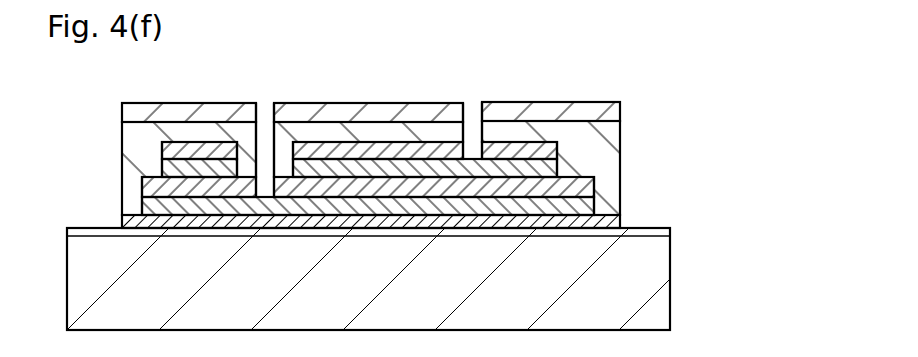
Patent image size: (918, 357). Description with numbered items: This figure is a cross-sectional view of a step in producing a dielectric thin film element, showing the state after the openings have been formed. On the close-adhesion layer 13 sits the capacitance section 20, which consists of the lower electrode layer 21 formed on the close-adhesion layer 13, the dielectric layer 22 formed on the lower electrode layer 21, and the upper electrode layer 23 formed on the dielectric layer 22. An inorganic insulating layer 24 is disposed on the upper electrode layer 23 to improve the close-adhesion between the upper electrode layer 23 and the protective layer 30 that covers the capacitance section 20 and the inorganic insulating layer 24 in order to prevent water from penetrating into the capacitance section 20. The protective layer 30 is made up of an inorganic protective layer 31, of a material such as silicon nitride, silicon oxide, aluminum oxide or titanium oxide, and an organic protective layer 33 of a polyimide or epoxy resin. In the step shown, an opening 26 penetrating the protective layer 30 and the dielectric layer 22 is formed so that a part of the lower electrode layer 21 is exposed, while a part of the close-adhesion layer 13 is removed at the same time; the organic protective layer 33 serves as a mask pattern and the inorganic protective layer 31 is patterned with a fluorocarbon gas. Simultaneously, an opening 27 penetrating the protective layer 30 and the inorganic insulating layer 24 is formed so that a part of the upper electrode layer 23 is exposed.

The close-adhesion layer 13 is at (625, 229).
The capacitance section 20 is at (450, 150).
The lower electrode layer 21 is at (594, 197).
The dielectric layer 22 is at (560, 178).
The upper electrode layer 23 is at (560, 148).
The inorganic insulating layer 24 is at (413, 119).
The opening 26 is at (259, 122).
The opening 27 is at (467, 122).
The protective layer 30 is at (551, 119).
The inorganic protective layer 31 is at (582, 127).
The organic protective layer 33 is at (551, 115).